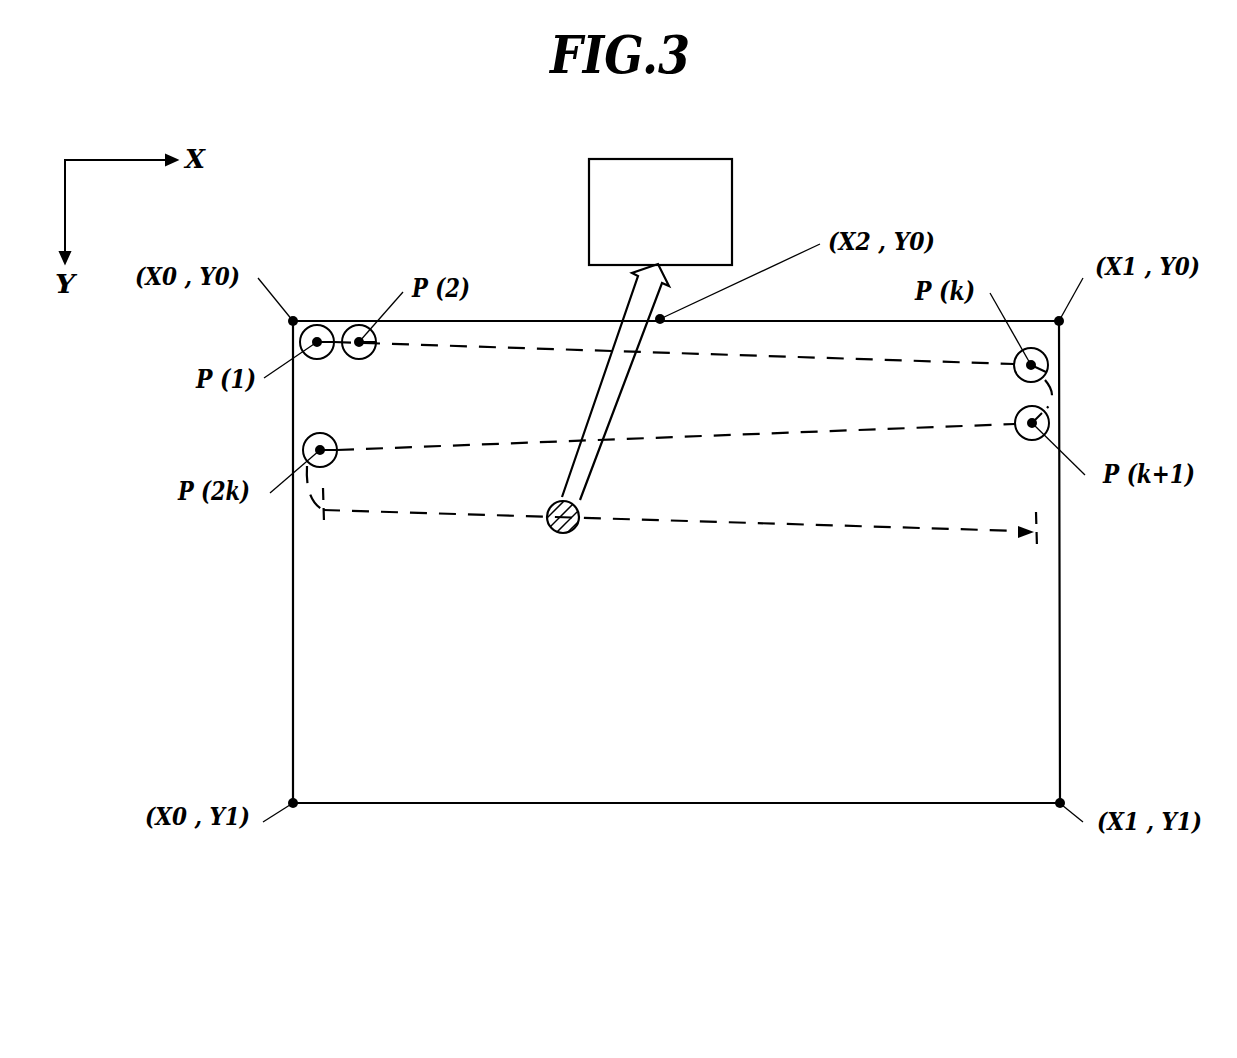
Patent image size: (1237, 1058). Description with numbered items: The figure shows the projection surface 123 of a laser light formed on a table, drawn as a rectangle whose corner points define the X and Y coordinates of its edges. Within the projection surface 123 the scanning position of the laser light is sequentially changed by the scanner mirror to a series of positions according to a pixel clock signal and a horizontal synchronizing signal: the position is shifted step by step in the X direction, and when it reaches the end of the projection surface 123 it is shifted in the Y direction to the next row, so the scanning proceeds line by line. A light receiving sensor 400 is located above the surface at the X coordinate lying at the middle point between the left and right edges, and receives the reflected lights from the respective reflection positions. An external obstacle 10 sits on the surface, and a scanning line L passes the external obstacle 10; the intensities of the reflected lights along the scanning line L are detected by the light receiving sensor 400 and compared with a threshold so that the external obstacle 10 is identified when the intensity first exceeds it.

The light receiving sensor 400 is at (658, 158).
The external obstacle 10 is at (553, 512).
The projection surface 123 is at (637, 803).
The scanning line L is at (750, 523).